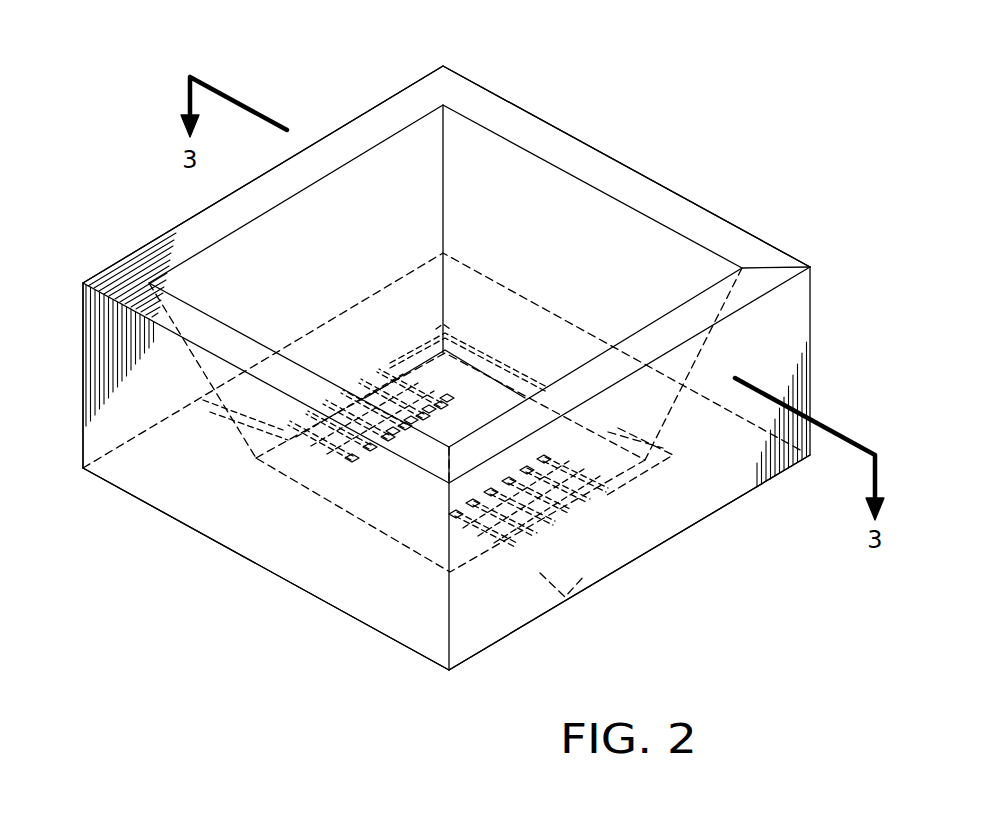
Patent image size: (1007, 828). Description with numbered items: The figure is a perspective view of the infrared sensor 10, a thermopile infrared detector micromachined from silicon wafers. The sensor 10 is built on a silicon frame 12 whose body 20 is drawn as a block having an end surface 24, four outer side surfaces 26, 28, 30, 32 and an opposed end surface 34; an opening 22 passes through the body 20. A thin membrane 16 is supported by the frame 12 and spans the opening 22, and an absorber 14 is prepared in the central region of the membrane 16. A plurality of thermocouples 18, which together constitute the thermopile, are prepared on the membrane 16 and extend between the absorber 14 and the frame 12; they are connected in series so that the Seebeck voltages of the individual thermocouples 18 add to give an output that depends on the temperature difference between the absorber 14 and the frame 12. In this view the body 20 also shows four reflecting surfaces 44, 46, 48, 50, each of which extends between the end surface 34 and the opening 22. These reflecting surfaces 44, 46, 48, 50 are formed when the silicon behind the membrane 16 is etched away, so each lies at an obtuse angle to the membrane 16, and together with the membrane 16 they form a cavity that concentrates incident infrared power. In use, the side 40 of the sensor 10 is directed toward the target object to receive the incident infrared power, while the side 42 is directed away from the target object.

The infrared sensor 10 is at (906, 138).
The frame 12 is at (812, 367).
The absorber 14 is at (465, 418).
The membrane 16 is at (446, 376).
The thermocouples 18 is at (377, 364).
The body 20 is at (688, 491).
The opening 22 is at (433, 347).
The end surface 24 is at (337, 605).
The outer side surface 26 is at (767, 247).
The outer side surface 28 is at (485, 623).
The outer side surface 30 is at (207, 503).
The outer side surface 32 is at (367, 110).
The opposed end surface 34 is at (533, 130).
The side 40 is at (215, 628).
The side 42 is at (700, 85).
The reflecting surface 44 is at (653, 252).
The reflecting surface 46 is at (683, 298).
The reflecting surface 48 is at (230, 318).
The reflecting surface 50 is at (230, 258).